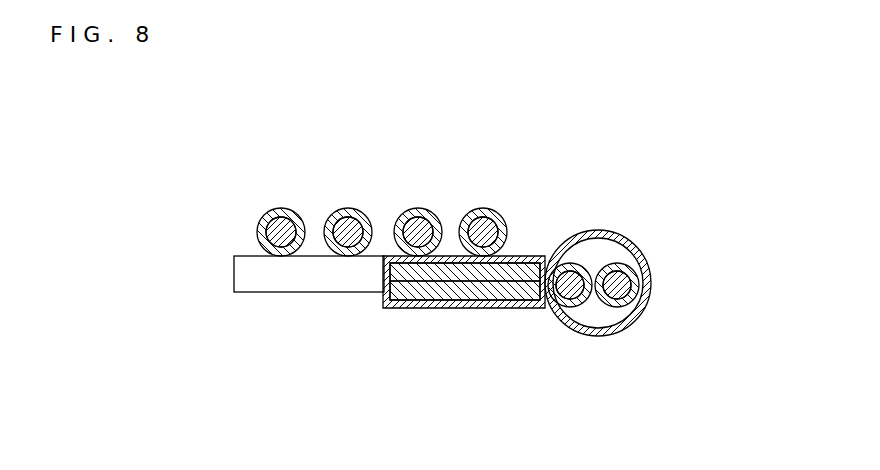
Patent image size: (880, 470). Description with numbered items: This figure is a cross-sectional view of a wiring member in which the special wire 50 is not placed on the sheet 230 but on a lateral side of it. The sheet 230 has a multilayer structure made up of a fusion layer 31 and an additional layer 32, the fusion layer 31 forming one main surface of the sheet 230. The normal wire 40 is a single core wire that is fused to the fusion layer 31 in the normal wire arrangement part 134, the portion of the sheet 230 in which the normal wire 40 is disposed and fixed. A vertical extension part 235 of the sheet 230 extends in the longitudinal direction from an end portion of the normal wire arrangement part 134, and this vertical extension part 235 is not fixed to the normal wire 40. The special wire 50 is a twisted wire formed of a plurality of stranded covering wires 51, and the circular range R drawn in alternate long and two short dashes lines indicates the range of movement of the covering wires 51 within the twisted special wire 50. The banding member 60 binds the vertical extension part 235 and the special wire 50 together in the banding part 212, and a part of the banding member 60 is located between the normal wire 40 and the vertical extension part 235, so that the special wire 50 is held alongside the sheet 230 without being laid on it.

The normal wire arrangement part 134 is at (308, 282).
The vertical extension part 235 is at (497, 312).
The sheet 230 is at (465, 328).
The fusion layer 31 is at (428, 303).
The additional layer 32 is at (462, 303).
The normal wire 40 is at (332, 212).
The banding member 60 is at (607, 231).
The special wire 50 is at (593, 344).
The covering wire 51 is at (632, 386).
The circular range R is at (545, 252).
The banding part 212 is at (660, 198).